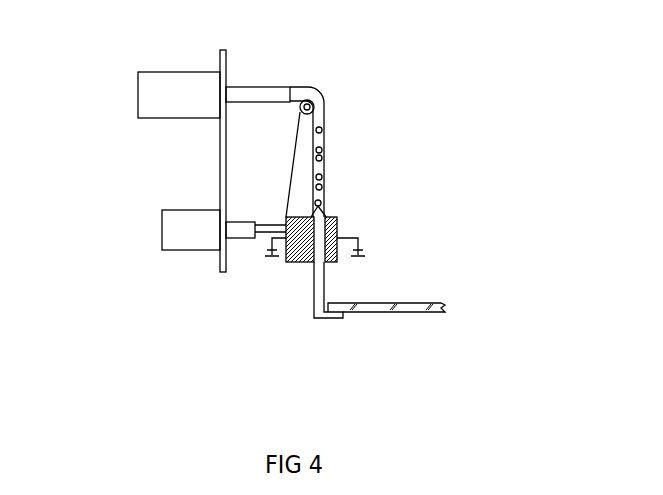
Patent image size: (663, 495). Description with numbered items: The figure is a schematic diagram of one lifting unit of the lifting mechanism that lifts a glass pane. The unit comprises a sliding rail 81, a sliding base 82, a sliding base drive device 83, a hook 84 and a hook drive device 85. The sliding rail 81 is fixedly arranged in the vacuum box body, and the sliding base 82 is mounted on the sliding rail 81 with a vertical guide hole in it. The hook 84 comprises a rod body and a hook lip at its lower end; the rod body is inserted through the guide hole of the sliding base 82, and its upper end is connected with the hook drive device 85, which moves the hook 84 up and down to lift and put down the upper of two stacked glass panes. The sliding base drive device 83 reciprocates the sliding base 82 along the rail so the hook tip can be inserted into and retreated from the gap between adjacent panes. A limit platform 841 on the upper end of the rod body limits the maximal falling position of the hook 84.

The hook drive device 85 is at (178, 95).
The sliding base drive device 83 is at (192, 230).
The limit platform 841 is at (325, 216).
The sliding base 82 is at (333, 224).
The sliding rail 81 is at (358, 238).
The hook 84 is at (317, 317).